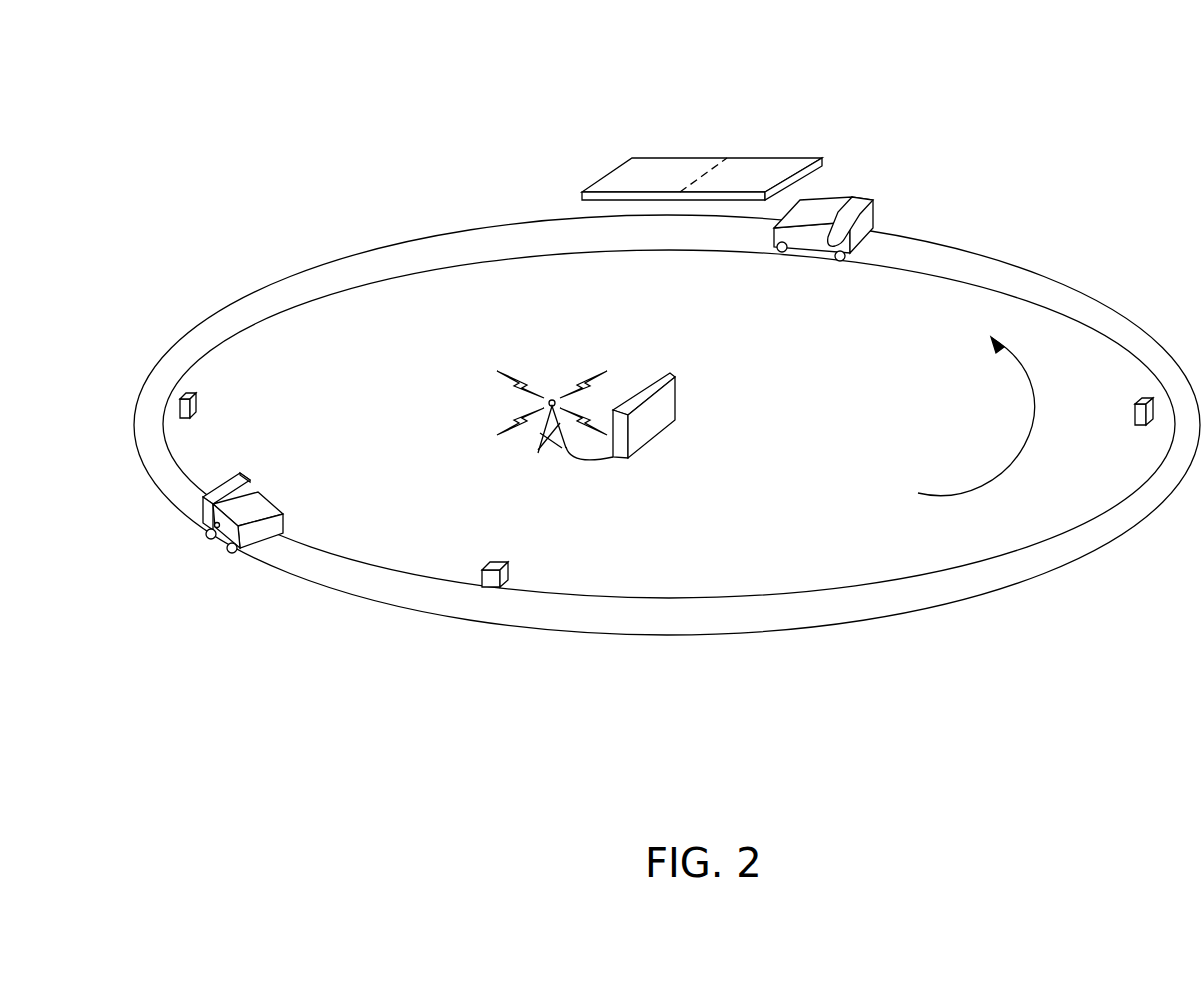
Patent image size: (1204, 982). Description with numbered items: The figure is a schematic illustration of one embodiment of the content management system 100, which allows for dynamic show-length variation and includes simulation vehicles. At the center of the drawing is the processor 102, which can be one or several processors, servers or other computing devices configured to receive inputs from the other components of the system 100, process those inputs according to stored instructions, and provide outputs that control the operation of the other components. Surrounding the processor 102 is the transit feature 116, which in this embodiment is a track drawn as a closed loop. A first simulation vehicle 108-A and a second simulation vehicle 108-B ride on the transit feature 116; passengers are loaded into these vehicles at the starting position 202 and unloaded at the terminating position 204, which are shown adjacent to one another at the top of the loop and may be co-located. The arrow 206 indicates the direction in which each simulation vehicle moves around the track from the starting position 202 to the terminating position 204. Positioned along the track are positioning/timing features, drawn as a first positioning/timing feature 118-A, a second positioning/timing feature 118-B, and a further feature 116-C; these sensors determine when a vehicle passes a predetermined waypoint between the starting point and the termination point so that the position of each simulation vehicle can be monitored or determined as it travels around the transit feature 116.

The content management system 100 is at (1052, 76).
The processor 102 is at (677, 398).
The first simulation vehicle 108-A is at (230, 532).
The second simulation vehicle 108-B is at (878, 207).
The transit feature 116 is at (1043, 270).
The track marker 116-C is at (1137, 418).
The first positioning/timing feature 118-A is at (195, 403).
The second positioning/timing feature 118-B is at (500, 562).
The starting position 202 is at (652, 178).
The terminating position 204 is at (748, 178).
The arrow 206 is at (1033, 417).